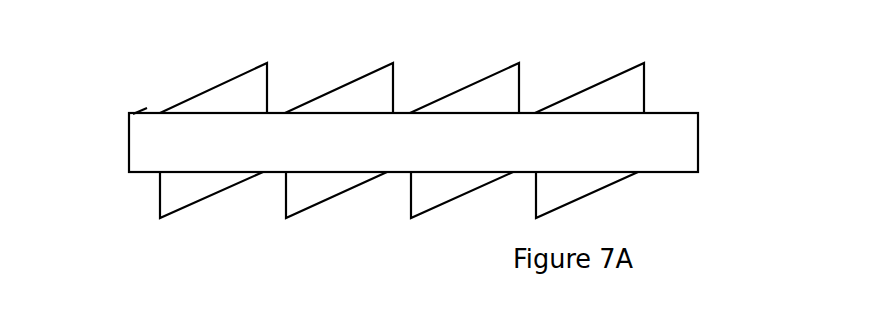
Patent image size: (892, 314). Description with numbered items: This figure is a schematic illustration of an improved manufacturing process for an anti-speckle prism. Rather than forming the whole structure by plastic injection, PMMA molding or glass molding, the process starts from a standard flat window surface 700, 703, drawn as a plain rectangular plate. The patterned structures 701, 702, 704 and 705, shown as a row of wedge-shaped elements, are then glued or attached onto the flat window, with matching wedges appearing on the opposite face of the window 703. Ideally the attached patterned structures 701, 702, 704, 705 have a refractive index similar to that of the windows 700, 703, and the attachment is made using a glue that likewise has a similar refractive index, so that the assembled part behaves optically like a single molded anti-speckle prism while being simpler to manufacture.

The flat window surface 700 is at (129, 114).
The patterned structure 701 is at (243, 97).
The patterned structure 702 is at (365, 97).
The flat window surface 703 is at (658, 167).
The patterned structure 704 is at (510, 85).
The patterned structure 705 is at (622, 83).